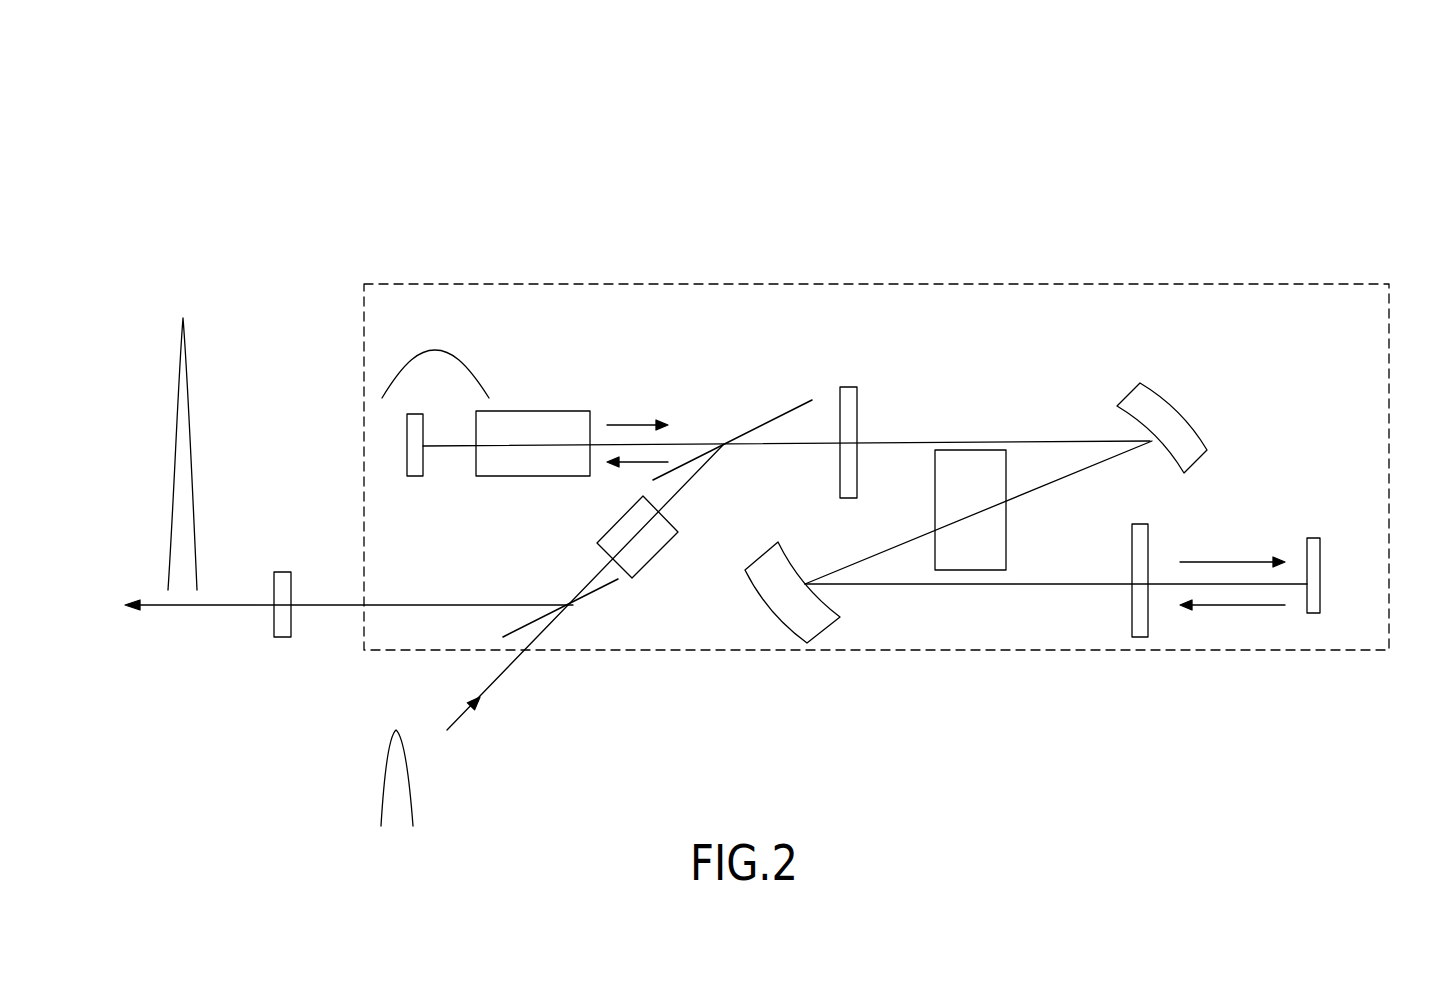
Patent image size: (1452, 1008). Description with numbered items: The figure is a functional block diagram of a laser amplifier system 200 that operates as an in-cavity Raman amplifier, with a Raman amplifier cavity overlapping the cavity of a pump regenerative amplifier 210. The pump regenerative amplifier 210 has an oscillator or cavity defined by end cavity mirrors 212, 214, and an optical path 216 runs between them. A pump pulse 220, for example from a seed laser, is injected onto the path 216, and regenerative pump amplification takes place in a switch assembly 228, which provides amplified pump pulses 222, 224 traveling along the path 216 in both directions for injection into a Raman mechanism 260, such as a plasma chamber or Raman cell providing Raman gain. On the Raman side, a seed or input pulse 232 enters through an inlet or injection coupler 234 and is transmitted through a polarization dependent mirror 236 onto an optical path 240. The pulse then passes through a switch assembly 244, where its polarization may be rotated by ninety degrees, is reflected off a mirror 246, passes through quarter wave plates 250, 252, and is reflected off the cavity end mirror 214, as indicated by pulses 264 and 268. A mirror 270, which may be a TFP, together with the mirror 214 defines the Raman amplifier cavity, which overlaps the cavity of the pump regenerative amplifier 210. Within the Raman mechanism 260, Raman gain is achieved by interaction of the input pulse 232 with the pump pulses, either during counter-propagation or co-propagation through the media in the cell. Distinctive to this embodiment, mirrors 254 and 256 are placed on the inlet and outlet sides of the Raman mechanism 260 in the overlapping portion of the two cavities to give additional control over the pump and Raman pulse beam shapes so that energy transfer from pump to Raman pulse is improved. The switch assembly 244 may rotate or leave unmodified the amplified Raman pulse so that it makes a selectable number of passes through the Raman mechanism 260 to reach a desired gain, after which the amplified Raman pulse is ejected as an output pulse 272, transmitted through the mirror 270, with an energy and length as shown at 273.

The laser amplifier system 200 is at (208, 130).
The pump regenerative amplifier 210 is at (458, 282).
The mirror 212 is at (407, 433).
The mirror 214 is at (1320, 592).
The optical path 216 is at (446, 448).
The pump pulse 220 is at (467, 368).
The amplified pump pulse 222 is at (624, 425).
The amplified pump pulse 224 is at (652, 462).
The switch assembly 228 is at (483, 477).
The input pulse 232 is at (381, 797).
The injection coupler 234 is at (495, 680).
The polarization dependent mirror 236 is at (520, 627).
The optical path 240 is at (593, 582).
The switch assembly 244 is at (655, 560).
The mirror 246 is at (792, 407).
The quarter wave plate 250 is at (858, 418).
The quarter wave plate 252 is at (1148, 550).
The mirror 254 is at (1210, 433).
The mirror 256 is at (830, 630).
The Raman mechanism 260 is at (1007, 540).
The pulse 264 is at (1252, 560).
The pulse 268 is at (1235, 605).
The mirror 270 is at (286, 571).
The output pulse 272 is at (161, 608).
The output pulse parameters 273 is at (172, 474).